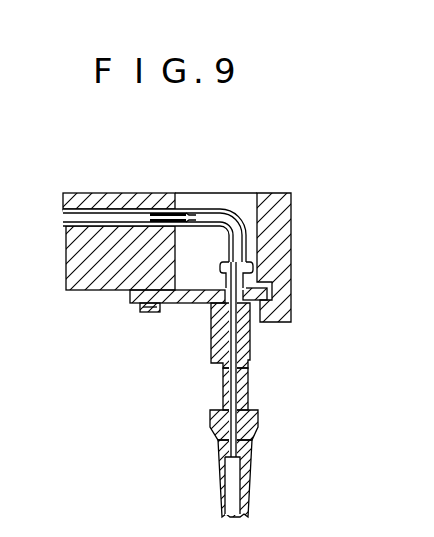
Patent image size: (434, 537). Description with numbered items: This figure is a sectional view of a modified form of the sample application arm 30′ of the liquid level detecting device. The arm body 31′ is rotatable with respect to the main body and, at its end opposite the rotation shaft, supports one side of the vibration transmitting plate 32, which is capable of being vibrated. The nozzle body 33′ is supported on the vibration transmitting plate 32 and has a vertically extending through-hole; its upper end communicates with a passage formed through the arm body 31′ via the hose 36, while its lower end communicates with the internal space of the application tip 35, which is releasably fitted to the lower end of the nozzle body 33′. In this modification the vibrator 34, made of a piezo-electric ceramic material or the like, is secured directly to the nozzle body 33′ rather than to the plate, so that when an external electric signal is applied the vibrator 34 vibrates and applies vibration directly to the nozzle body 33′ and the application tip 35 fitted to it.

The sample application arm 30′ is at (98, 176).
The arm body 31′ is at (133, 192).
The vibration transmitting plate 32 is at (183, 298).
The nozzle body 33′ is at (243, 388).
The vibrator 34 is at (250, 341).
The application tip 35 is at (248, 470).
The hose 36 is at (219, 210).